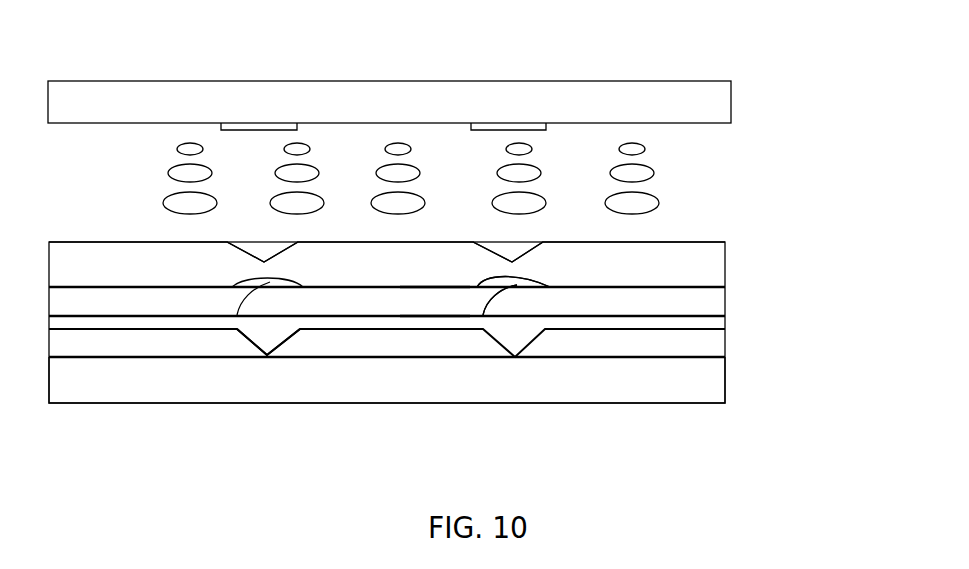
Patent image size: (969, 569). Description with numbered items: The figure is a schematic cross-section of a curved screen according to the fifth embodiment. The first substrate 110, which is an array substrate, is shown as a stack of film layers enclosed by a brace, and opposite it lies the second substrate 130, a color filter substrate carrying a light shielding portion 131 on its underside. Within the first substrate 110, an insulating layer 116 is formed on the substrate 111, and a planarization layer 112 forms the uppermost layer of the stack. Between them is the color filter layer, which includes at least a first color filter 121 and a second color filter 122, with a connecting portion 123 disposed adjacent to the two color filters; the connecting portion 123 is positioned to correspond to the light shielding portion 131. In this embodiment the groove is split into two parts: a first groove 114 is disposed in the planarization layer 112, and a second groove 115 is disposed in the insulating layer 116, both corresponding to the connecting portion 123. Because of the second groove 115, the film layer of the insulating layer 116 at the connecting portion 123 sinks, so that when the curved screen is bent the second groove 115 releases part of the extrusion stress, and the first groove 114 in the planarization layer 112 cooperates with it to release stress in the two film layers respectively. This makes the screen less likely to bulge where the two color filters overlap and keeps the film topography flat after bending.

The first substrate 110 is at (833, 253).
The substrate 111 is at (702, 387).
The planarization layer 112 is at (702, 268).
The first groove 114 is at (510, 241).
The second groove 115 is at (272, 342).
The insulating layer 116 is at (702, 343).
The first color filter 121 is at (702, 302).
The second color filter 122 is at (448, 303).
The connecting portion 123 is at (515, 285).
The second substrate 130 is at (713, 98).
The light shielding portion 131 is at (507, 130).